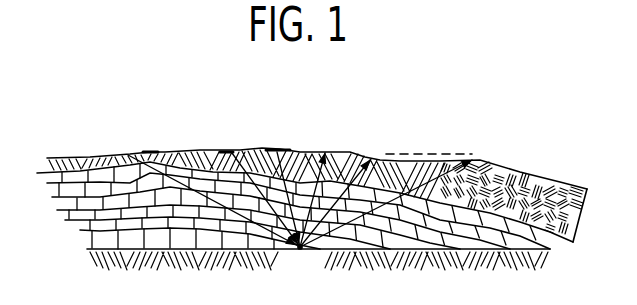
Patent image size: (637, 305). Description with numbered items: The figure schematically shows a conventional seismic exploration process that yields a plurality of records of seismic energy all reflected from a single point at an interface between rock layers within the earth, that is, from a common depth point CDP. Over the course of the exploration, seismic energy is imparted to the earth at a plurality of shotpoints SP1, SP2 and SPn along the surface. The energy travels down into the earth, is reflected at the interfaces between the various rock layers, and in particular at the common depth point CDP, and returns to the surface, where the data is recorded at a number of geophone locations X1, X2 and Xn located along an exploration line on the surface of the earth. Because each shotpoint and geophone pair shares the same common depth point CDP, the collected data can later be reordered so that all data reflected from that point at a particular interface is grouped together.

The shotpoint SPn is at (204, 188).
The shotpoint SP2 is at (253, 187).
The shotpoint SP1 is at (280, 186).
The geophone location X1 is at (322, 187).
The geophone location X2 is at (347, 189).
The geophone location Xn is at (399, 192).
The common depth point CDP is at (299, 258).